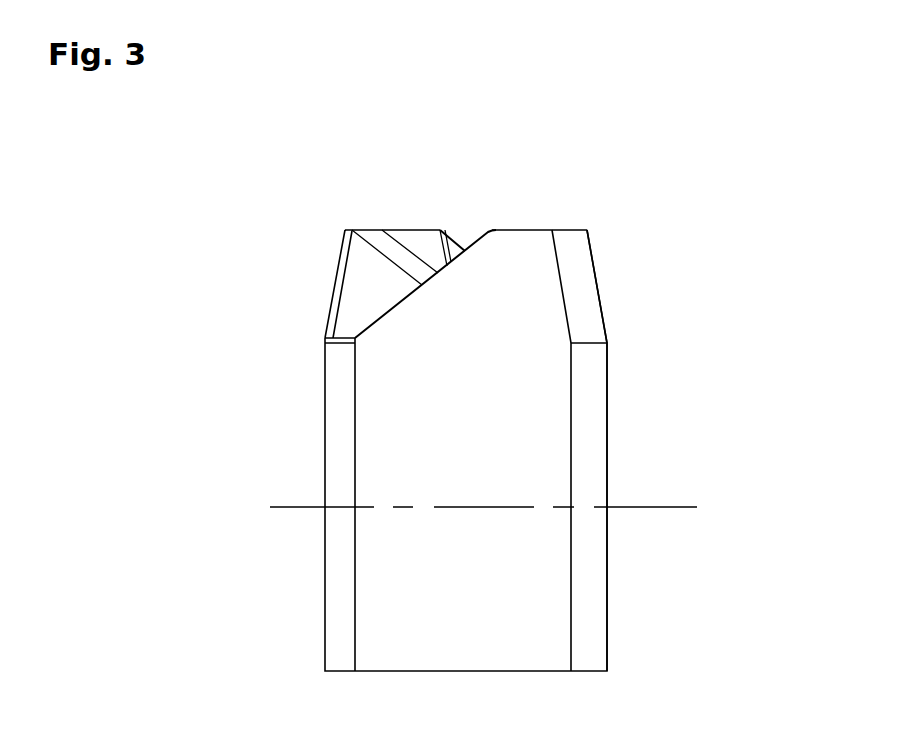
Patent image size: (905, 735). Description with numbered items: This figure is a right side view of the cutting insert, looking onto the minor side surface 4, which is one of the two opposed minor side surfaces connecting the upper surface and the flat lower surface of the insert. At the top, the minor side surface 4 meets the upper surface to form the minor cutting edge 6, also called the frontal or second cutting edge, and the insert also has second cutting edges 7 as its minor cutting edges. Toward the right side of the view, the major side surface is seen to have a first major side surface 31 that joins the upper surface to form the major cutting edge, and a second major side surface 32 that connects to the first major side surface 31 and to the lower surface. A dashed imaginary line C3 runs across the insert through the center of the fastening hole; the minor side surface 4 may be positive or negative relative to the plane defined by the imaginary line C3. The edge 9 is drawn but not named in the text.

The minor side surface 4 is at (397, 437).
The minor cutting edge 6 is at (518, 230).
The second cutting edge 7 is at (383, 316).
The flank edge 9 is at (573, 230).
The first major side surface 31 is at (598, 285).
The second major side surface 32 is at (606, 440).
The imaginary line C3 is at (466, 508).